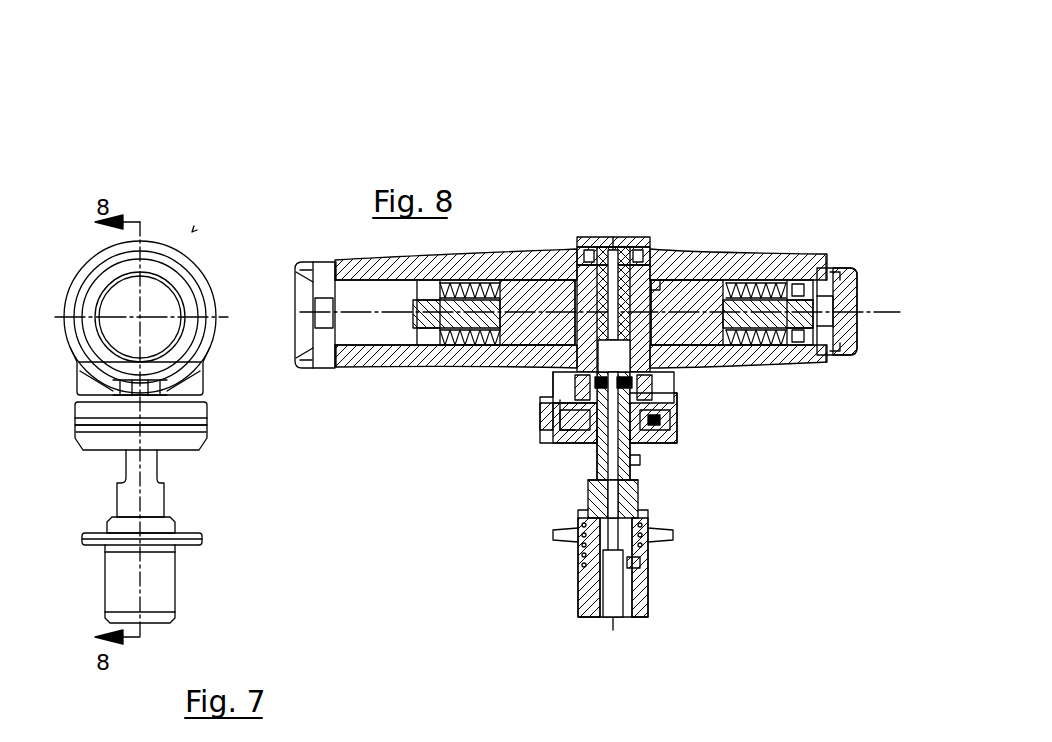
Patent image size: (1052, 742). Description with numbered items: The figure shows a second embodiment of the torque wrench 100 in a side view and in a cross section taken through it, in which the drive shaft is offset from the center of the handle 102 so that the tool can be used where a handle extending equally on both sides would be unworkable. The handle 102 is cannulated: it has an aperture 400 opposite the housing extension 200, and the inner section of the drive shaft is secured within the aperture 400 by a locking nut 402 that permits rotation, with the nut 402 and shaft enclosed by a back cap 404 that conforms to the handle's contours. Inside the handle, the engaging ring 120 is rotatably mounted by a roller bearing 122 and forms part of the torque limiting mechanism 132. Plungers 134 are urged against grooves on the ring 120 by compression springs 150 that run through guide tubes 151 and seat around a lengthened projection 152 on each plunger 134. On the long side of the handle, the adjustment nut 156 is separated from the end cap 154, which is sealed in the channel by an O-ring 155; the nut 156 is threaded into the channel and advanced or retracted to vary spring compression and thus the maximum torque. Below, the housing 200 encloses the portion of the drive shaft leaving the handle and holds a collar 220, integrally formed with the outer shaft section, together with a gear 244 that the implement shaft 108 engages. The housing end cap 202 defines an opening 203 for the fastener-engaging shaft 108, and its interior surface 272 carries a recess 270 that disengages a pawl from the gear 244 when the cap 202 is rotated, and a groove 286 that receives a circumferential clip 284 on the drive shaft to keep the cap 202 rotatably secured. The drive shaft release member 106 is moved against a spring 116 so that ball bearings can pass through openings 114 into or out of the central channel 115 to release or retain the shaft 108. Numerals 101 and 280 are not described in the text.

In FIG. 7, the torque wrench 100 is at (192, 232).
In FIG. 8, the torque wrench 100 is at (494, 438).
In FIG. 8, the cap retainer 101 is at (622, 250).
In FIG. 7, the handle 102 is at (212, 343).
In FIG. 8, the handle 102 is at (528, 258).
In FIG. 7, the drive shaft release member 106 is at (167, 580).
In FIG. 8, the drive shaft release member 106 is at (580, 598).
In FIG. 7, the fastener-engaging shaft 108 is at (127, 460).
In FIG. 8, the fastener-engaging shaft 108 is at (588, 485).
In FIG. 8, the openings 114 is at (642, 570).
In FIG. 8, the central channel 115 is at (634, 560).
In FIG. 8, the spring 116 is at (578, 542).
In FIG. 8, the engaging ring 120 is at (566, 440).
In FIG. 8, the roller bearing 122 is at (556, 390).
In FIG. 8, the torque limiting mechanism 132 is at (663, 262).
In FIG. 8, the plungers 134 is at (572, 272).
In FIG. 8, the compression springs 150 is at (471, 280).
In FIG. 8, the guide tubes 151 is at (497, 278).
In FIG. 8, the projection 152 is at (410, 328).
In FIG. 7, the end cap 154 is at (105, 298).
In FIG. 8, the end cap 154 is at (300, 282).
In FIG. 8, the O-ring 155 is at (306, 352).
In FIG. 8, the adjustment nut 156 is at (343, 257).
In FIG. 7, the housing extension 200 is at (82, 380).
In FIG. 8, the housing extension 200 is at (540, 380).
In FIG. 7, the end cap 202 is at (190, 438).
In FIG. 8, the end cap 202 is at (572, 440).
In FIG. 8, the opening 203 is at (642, 460).
In FIG. 8, the collar 220 is at (672, 392).
In FIG. 8, the gear 244 is at (667, 437).
In FIG. 8, the recess 270 is at (660, 432).
In FIG. 8, the interior surface 272 is at (578, 462).
In FIG. 8, the stem seal 280 is at (662, 372).
In FIG. 8, the circumferential clip 284 is at (670, 400).
In FIG. 8, the groove 286 is at (550, 400).
In FIG. 8, the aperture 400 is at (580, 238).
In FIG. 8, the locking nut 402 is at (712, 256).
In FIG. 8, the back cap 404 is at (635, 250).